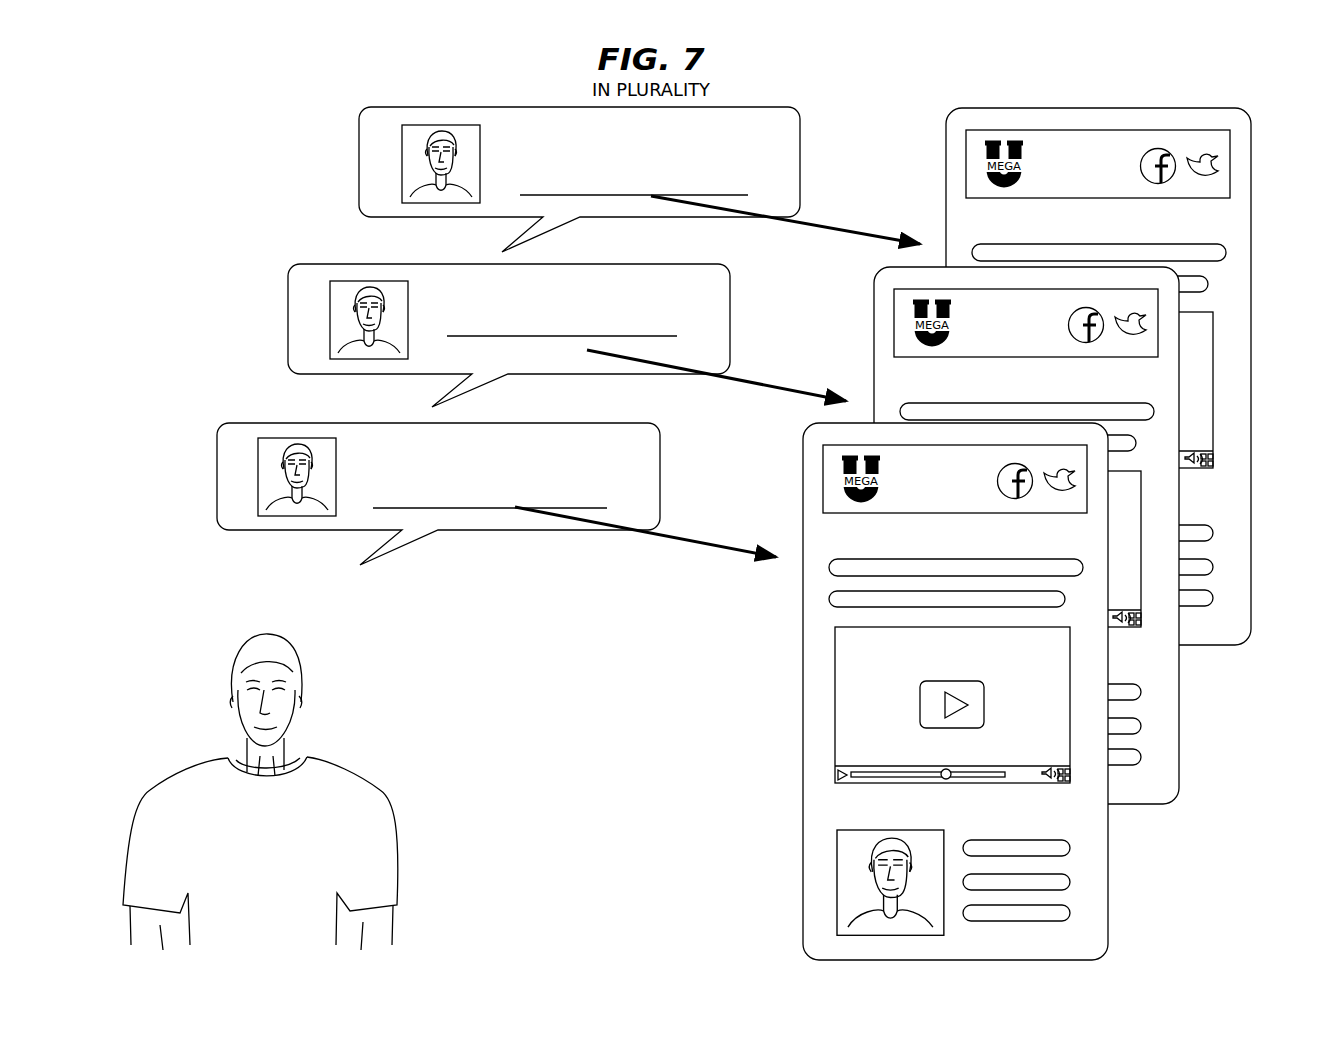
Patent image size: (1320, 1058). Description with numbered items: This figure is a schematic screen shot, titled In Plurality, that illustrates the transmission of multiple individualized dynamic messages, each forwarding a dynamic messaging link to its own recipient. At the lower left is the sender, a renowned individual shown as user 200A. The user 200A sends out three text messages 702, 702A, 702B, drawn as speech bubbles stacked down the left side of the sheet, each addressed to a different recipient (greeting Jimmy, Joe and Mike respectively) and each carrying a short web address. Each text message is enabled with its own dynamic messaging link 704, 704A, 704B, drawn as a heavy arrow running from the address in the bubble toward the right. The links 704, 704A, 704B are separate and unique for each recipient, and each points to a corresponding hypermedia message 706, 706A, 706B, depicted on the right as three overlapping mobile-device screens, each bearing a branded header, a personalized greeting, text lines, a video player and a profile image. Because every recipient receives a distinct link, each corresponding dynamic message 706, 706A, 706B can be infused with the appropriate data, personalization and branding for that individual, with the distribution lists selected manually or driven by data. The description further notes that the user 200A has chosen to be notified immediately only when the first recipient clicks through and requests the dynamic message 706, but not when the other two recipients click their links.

The user 200A is at (232, 665).
The text message 702 is at (359, 168).
The text message 702A is at (288, 325).
The text message 702B is at (217, 480).
The dynamic messaging link 704 is at (785, 220).
The dynamic messaging link 704A is at (716, 375).
The dynamic messaging link 704B is at (645, 532).
The hypermedia message 706 is at (1253, 613).
The hypermedia message 706A is at (1183, 770).
The hypermedia message 706B is at (1110, 927).